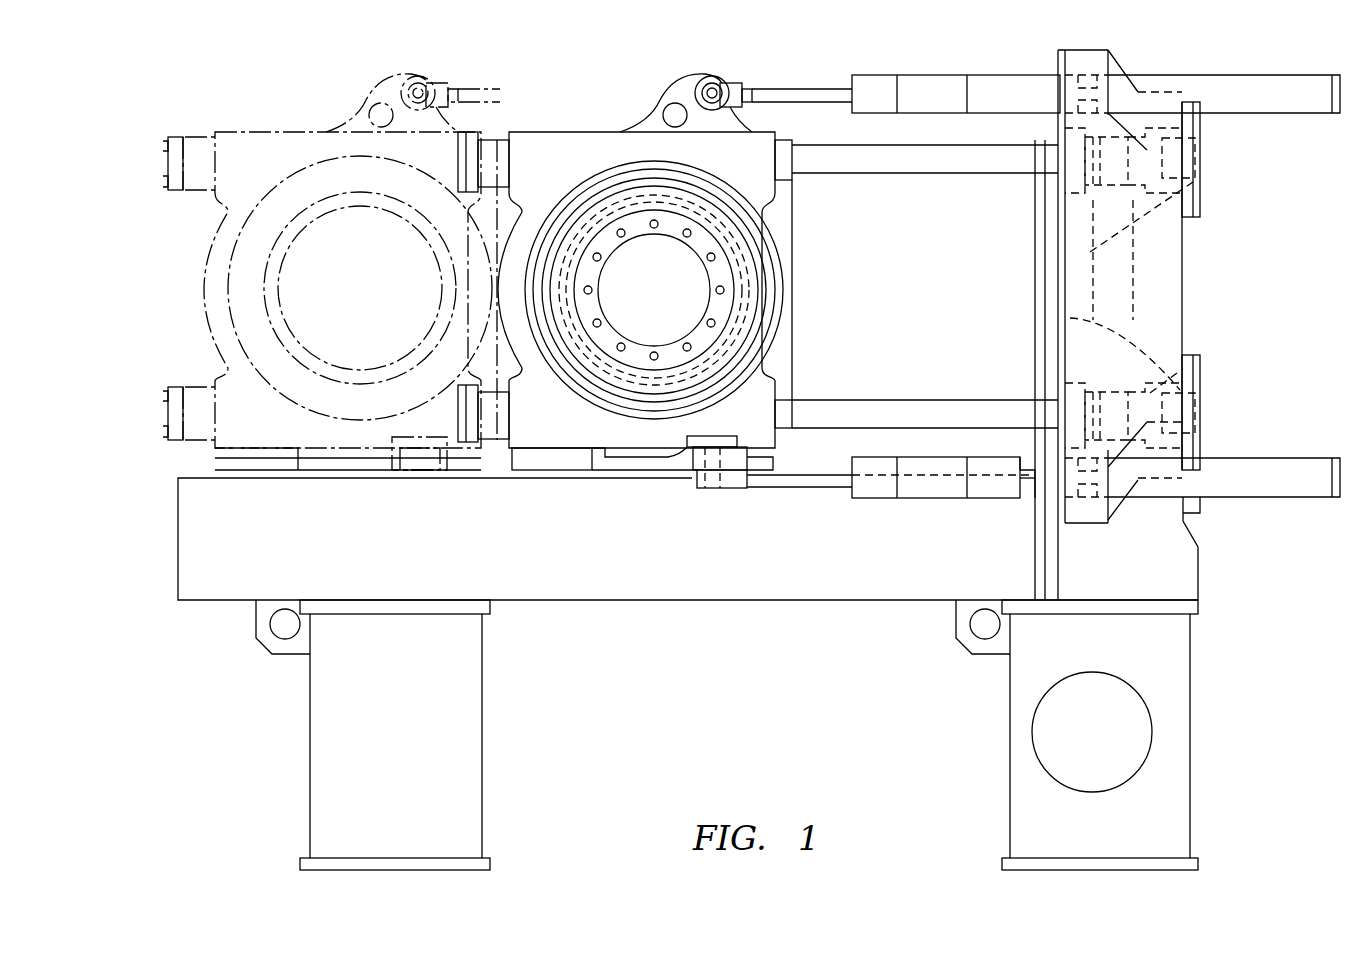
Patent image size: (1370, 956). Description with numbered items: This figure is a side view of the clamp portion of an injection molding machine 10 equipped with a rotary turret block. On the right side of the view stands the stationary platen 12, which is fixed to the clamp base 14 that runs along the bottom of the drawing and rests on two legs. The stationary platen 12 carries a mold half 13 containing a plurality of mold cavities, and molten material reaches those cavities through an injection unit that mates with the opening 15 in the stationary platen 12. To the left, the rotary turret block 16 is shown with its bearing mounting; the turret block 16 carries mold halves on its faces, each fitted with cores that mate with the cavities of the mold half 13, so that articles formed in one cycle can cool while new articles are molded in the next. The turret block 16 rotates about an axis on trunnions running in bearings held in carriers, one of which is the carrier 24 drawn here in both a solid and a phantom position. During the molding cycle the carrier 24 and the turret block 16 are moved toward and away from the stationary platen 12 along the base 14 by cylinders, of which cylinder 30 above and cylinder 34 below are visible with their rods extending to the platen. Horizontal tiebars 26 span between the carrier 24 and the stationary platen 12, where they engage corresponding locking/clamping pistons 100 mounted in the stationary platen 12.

The injection molding machine 10 is at (803, 74).
The stationary platen 12 is at (1128, 228).
The mold half 13 is at (900, 278).
The clamp base 14 is at (915, 592).
The opening 15 is at (1175, 322).
The rotary turret block 16 is at (277, 300).
The carrier 24 is at (285, 150).
The tiebars 26 is at (952, 160).
The cylinder 30 is at (1285, 110).
The cylinder 34 is at (1305, 472).
The locking/clamping pistons 100 is at (1177, 373).